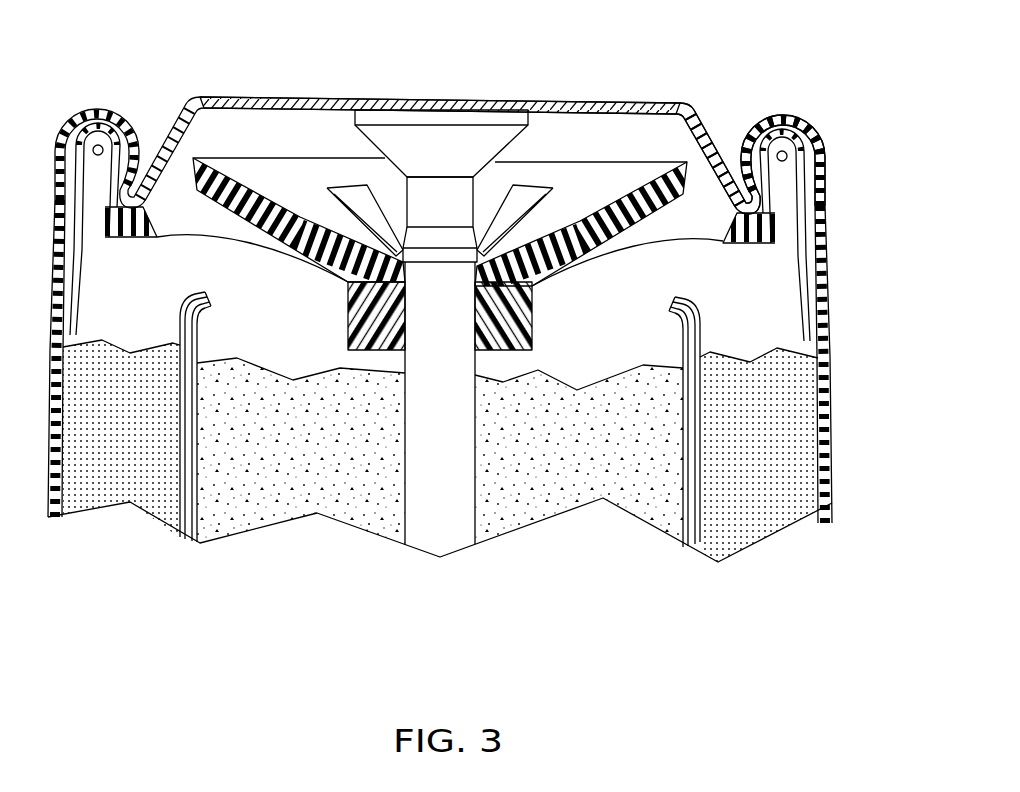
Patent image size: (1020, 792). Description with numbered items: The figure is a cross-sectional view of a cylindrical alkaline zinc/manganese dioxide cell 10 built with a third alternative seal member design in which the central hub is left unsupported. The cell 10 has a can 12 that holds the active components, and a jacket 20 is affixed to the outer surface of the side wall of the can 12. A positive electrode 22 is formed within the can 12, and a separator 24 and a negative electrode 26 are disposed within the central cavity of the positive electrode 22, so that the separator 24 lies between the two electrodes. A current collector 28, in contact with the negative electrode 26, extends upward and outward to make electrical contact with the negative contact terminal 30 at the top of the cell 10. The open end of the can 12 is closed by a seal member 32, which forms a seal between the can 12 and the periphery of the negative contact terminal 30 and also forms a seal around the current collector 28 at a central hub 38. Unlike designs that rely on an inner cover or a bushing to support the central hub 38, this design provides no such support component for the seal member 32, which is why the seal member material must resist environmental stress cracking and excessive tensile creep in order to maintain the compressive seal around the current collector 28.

The cell 10 is at (850, 130).
The can 12 is at (832, 437).
The jacket 20 is at (832, 392).
The positive electrode 22 is at (780, 512).
The separator 24 is at (177, 527).
The negative electrode 26 is at (288, 503).
The current collector 28 is at (455, 137).
The negative contact terminal 30 is at (223, 98).
The seal member 32 is at (258, 188).
The central hub 38 is at (362, 315).